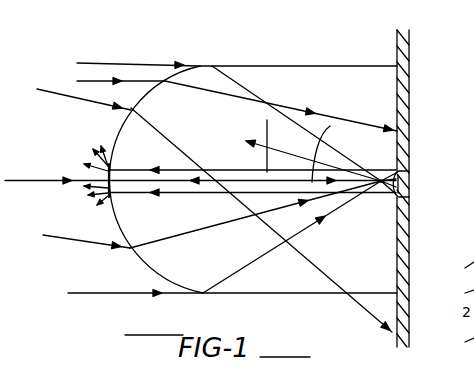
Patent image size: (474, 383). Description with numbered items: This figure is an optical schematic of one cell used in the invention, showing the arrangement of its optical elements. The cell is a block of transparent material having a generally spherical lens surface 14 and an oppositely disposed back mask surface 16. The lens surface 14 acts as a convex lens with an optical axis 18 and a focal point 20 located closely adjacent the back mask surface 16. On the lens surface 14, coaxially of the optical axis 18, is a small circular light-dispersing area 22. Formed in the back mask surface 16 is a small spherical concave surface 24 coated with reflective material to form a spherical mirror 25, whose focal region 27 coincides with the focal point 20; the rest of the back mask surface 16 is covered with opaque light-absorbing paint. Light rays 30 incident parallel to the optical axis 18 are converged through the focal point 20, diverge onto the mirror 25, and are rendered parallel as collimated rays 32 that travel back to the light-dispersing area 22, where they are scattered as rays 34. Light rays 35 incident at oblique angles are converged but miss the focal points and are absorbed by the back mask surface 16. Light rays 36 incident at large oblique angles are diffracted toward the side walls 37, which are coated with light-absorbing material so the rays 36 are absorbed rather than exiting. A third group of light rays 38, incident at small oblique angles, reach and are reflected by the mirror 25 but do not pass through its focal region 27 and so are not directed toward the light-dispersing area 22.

The lens surface 14 is at (200, 66).
The back mask surface 16 is at (410, 120).
The optical axis 18 is at (330, 126).
The focal point 20 is at (379, 186).
The light-dispersing area 22 is at (113, 166).
The concave surface 24 is at (406, 176).
The spherical mirror 25 is at (404, 190).
The focal region 27 is at (381, 180).
The light rays 30 is at (139, 65).
The collimated light rays 32 is at (267, 120).
The scattered light rays 34 is at (93, 158).
The oblique light rays 35 is at (86, 81).
The large-angle oblique light rays 36 is at (58, 95).
The side walls 37 is at (277, 295).
The small-angle oblique light rays 38 is at (287, 152).